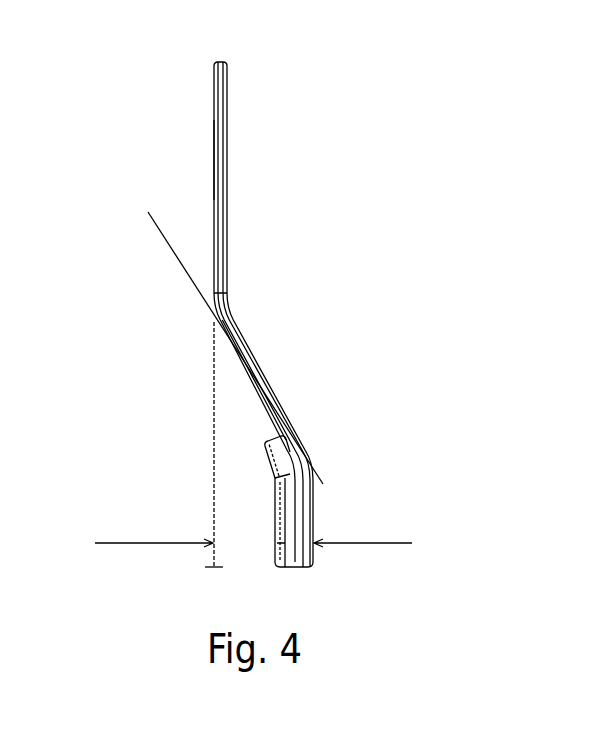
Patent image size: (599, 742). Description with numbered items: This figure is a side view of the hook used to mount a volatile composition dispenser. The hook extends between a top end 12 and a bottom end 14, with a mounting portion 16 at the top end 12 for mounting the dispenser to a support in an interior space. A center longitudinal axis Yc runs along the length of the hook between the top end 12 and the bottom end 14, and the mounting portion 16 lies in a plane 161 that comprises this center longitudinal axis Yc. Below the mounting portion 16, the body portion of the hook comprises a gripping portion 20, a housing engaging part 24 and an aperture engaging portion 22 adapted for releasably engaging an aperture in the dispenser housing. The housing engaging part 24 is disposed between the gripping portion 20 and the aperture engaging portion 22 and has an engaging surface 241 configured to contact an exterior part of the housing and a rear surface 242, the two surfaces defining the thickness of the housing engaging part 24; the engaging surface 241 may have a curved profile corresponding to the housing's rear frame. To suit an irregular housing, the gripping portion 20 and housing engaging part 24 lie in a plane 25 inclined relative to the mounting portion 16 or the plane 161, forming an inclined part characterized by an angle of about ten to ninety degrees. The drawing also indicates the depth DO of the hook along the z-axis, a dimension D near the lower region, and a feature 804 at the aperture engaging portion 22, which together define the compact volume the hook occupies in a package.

The top end 12 is at (214, 62).
The mounting portion 16 is at (227, 200).
The plane 161 is at (214, 157).
The gripping portion 20 is at (232, 325).
The housing engaging part 24 is at (273, 390).
The engaging surface 241 is at (235, 371).
The rear surface 242 is at (287, 412).
The bottom end 14 is at (303, 568).
The aperture engaging portion 22 is at (310, 495).
The tab 804 is at (270, 446).
The plane 25 is at (178, 260).
The center longitudinal axis Yc is at (213, 340).
The distance D is at (247, 421).
The depth DO is at (382, 543).